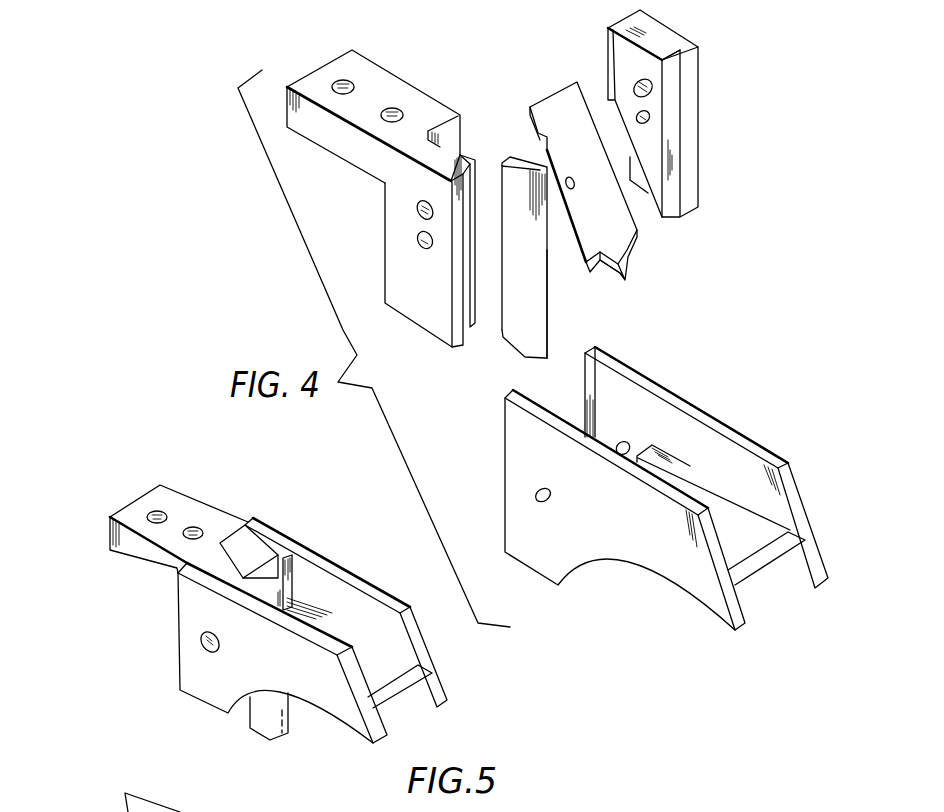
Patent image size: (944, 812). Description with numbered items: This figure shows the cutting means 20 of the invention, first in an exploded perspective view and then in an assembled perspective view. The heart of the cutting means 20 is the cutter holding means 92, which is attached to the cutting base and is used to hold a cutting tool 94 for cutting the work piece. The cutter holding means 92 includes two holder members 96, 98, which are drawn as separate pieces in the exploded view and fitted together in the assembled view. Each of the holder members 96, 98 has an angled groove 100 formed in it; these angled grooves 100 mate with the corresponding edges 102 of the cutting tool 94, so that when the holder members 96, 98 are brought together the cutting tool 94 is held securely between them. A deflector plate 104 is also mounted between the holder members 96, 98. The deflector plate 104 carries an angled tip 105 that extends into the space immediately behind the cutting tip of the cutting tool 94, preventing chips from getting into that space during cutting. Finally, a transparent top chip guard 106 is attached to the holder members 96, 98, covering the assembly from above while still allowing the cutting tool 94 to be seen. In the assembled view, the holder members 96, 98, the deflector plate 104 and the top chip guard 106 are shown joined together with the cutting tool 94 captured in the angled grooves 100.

In FIG. 4, the cutting means 20 is at (464, 70).
In FIG. 5, the cutting means 20 is at (310, 495).
In FIG. 4, the cutter holding means 92 is at (381, 198).
In FIG. 5, the cutter holding means 92 is at (158, 549).
In FIG. 4, the cutting tool 94 is at (547, 345).
In FIG. 5, the cutting tool 94 is at (290, 732).
In FIG. 4, the holder member 96 is at (345, 150).
In FIG. 5, the holder member 96 is at (110, 533).
In FIG. 4, the holder member 98 is at (692, 90).
In FIG. 5, the holder member 98 is at (236, 537).
In FIG. 4, the angled groove 100 is at (462, 154).
In FIG. 4, the edge of cutting tool 102 is at (497, 330).
In FIG. 4, the deflector plate 104 is at (614, 245).
In FIG. 4, the angled tip 105 is at (617, 280).
In FIG. 4, the transparent top chip guard 106 is at (672, 590).
In FIG. 5, the transparent top chip guard 106 is at (446, 655).